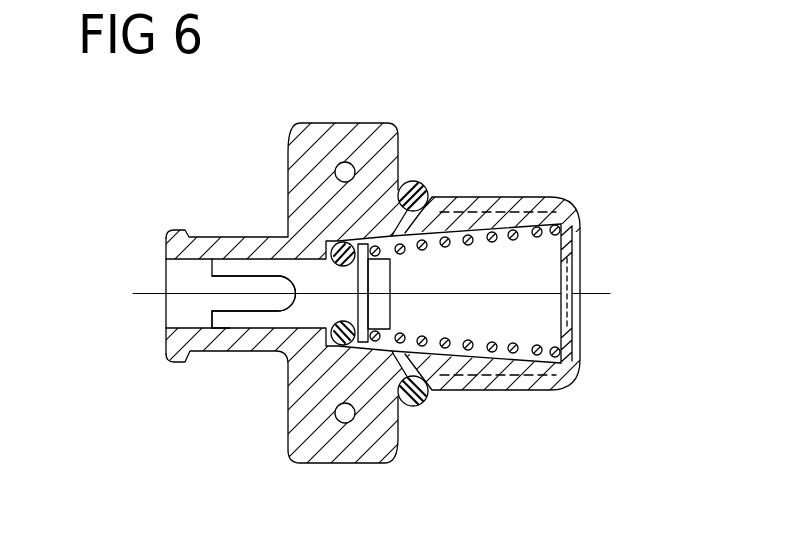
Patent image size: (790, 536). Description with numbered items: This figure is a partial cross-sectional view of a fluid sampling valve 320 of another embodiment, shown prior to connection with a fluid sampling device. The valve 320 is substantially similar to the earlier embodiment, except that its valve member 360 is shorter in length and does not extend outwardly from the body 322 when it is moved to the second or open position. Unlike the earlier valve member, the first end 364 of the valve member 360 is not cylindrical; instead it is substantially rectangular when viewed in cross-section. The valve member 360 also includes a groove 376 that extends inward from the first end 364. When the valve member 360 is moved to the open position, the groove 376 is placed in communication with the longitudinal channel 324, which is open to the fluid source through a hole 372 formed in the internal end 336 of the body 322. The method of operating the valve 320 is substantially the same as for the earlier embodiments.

The valve 320 is at (148, 153).
The body 322 is at (278, 230).
The longitudinal channel 324 is at (522, 283).
The internal end 336 is at (432, 268).
The valve member 360 is at (229, 259).
The first end 364 is at (213, 320).
The hole 372 is at (582, 247).
The groove 376 is at (215, 307).